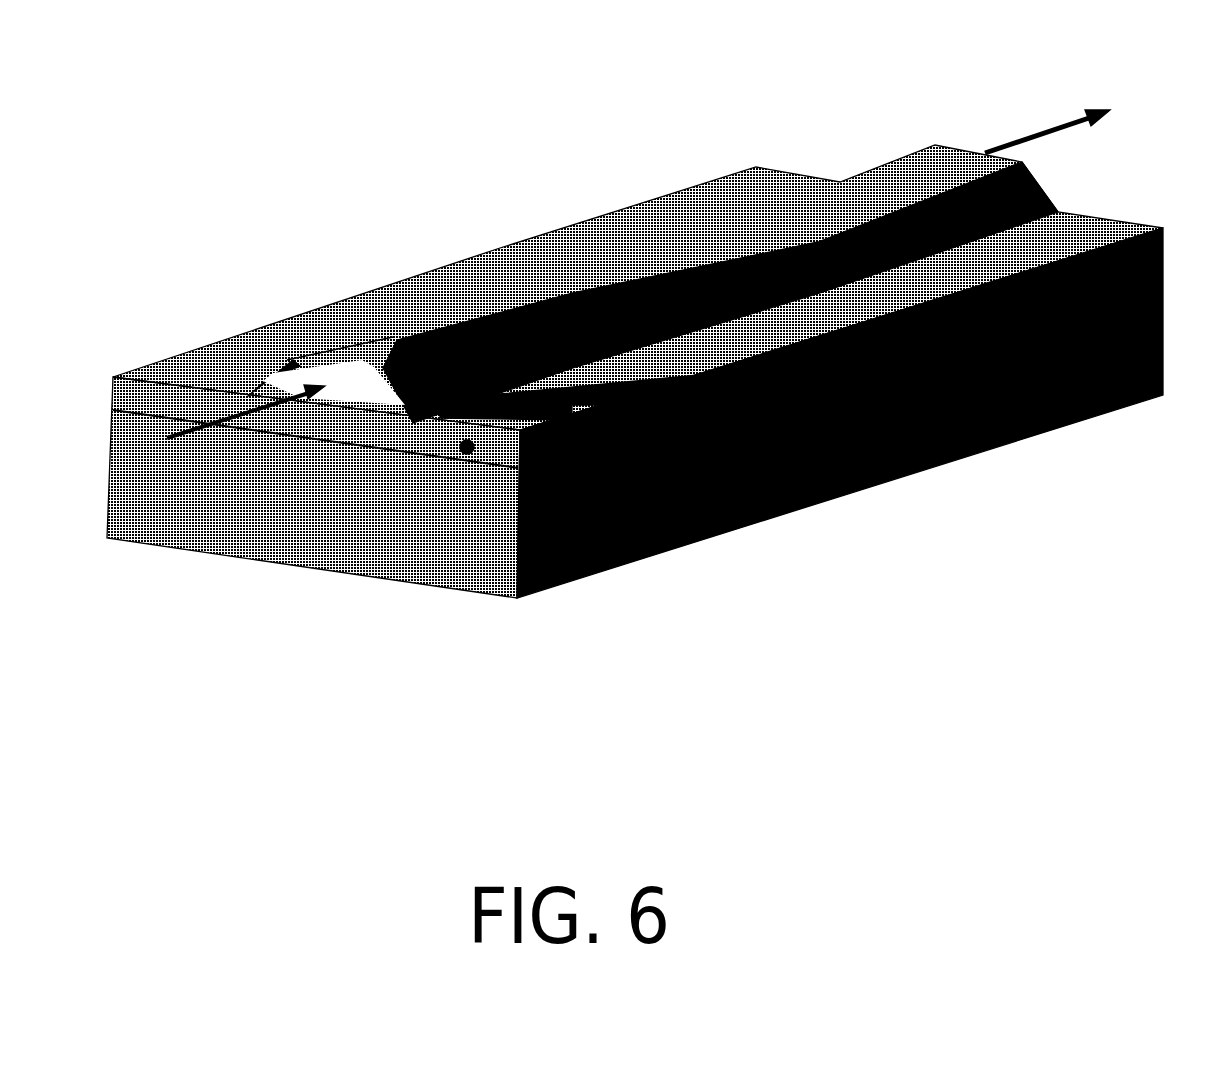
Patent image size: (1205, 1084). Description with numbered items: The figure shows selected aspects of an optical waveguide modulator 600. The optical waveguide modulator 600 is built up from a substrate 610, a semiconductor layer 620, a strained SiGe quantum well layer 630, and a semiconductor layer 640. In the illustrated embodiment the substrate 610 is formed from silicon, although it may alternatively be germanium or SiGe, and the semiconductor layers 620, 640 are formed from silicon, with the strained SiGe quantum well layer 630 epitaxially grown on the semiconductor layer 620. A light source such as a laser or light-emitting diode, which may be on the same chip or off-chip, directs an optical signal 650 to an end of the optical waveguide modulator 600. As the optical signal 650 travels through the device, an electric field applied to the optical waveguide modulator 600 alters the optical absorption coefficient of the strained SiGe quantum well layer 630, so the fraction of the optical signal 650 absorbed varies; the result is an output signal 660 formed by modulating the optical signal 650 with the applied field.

The optical waveguide modulator 600 is at (616, 400).
The substrate 610 is at (635, 371).
The semiconductor layer 620 is at (508, 407).
The strained SiGe quantum well layer 630 is at (370, 380).
The semiconductor layer 640 is at (822, 178).
The optical signal 650 is at (197, 445).
The output signal 660 is at (1050, 112).